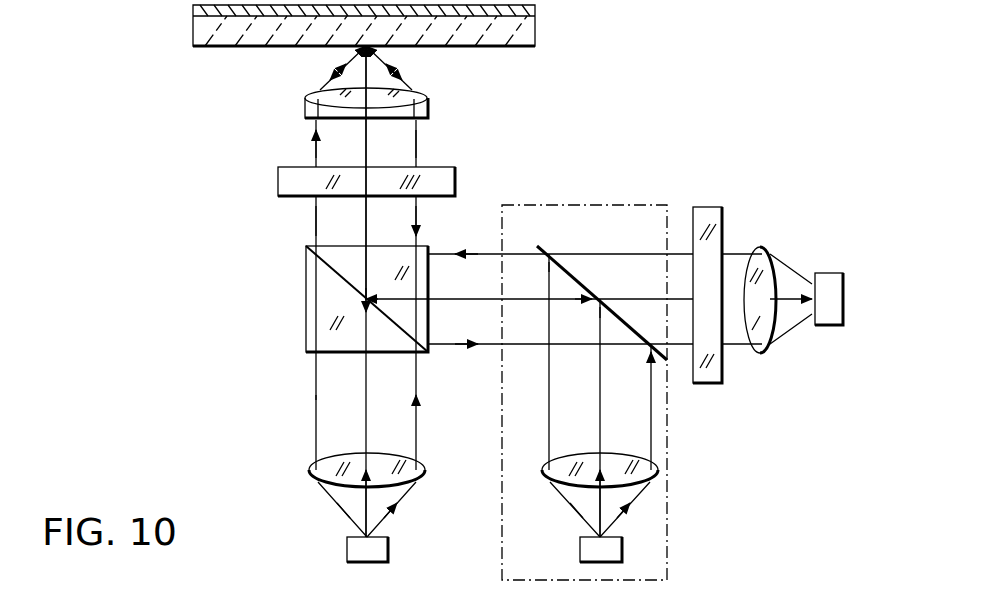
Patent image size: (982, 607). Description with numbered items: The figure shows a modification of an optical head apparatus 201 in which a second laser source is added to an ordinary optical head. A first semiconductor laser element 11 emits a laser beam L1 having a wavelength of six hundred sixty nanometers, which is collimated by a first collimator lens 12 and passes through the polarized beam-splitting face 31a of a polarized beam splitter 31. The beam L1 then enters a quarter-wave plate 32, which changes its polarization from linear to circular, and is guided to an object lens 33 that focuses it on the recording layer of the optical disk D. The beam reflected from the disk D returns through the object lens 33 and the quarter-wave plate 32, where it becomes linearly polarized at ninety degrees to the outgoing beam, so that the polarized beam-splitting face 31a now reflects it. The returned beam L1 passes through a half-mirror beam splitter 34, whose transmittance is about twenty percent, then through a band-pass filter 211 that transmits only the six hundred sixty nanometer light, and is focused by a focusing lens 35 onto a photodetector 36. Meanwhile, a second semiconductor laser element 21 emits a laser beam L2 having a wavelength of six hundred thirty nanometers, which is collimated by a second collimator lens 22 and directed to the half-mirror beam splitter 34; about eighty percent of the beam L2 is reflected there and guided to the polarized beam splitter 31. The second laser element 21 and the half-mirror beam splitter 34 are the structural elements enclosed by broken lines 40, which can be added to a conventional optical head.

The optical disk D is at (535, 18).
The optical head apparatus 201 is at (600, 120).
The object lens 33 is at (432, 100).
The λ/4 plate 32 is at (457, 181).
The polarized beam splitter 31 is at (387, 366).
The polarized beam-splitting face 31a is at (412, 340).
The half-mirror beam splitter 34 is at (572, 272).
The band-pass filter 211 is at (712, 215).
The focusing lens 35 is at (764, 250).
The photodetector 36 is at (827, 325).
The first collimator lens 12 is at (408, 472).
The first semiconductor laser element 11 is at (371, 563).
The laser beam L1 is at (330, 420).
The laser beam L2 is at (602, 405).
The second collimator lens 22 is at (563, 462).
The second semiconductor laser element 21 is at (580, 548).
The broken lines 40 is at (672, 545).